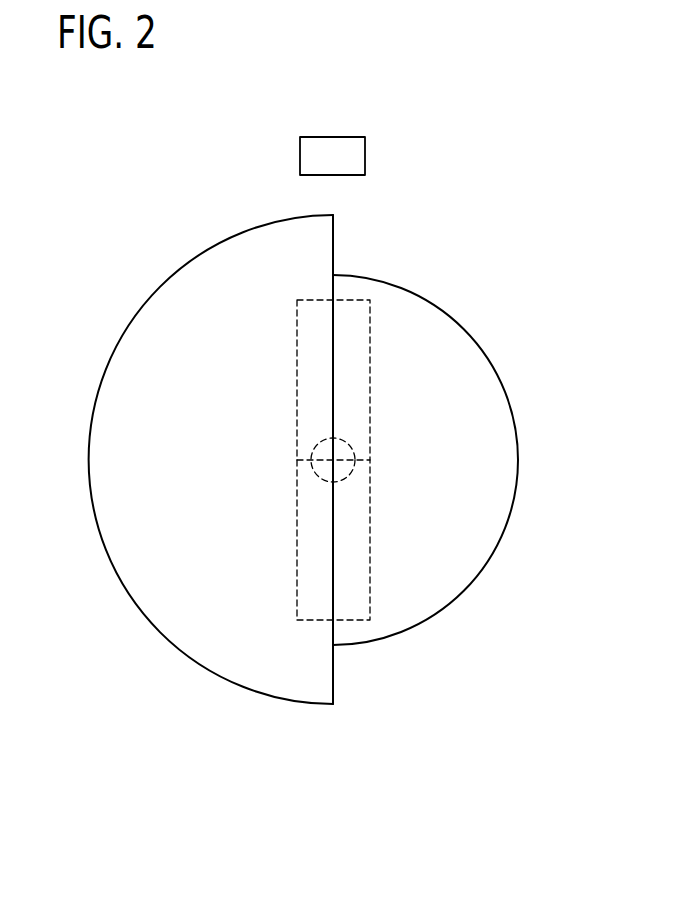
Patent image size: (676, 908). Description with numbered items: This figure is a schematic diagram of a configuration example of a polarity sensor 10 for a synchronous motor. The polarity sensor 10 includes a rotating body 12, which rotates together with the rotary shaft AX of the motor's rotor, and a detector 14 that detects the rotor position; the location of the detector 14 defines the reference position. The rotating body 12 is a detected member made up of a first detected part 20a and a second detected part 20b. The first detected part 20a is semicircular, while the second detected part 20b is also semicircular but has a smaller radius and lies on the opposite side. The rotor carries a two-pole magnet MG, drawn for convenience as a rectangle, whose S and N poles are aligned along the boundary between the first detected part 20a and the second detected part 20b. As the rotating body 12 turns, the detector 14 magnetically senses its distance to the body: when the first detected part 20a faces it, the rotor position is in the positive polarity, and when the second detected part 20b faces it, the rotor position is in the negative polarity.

The polarity sensor 10 is at (188, 146).
The rotating body 12 is at (325, 476).
The detector 14 is at (337, 137).
The first detected part 20a is at (292, 668).
The second detected part 20b is at (418, 600).
The rotary shaft AX is at (316, 452).
The magnet MG is at (297, 502).